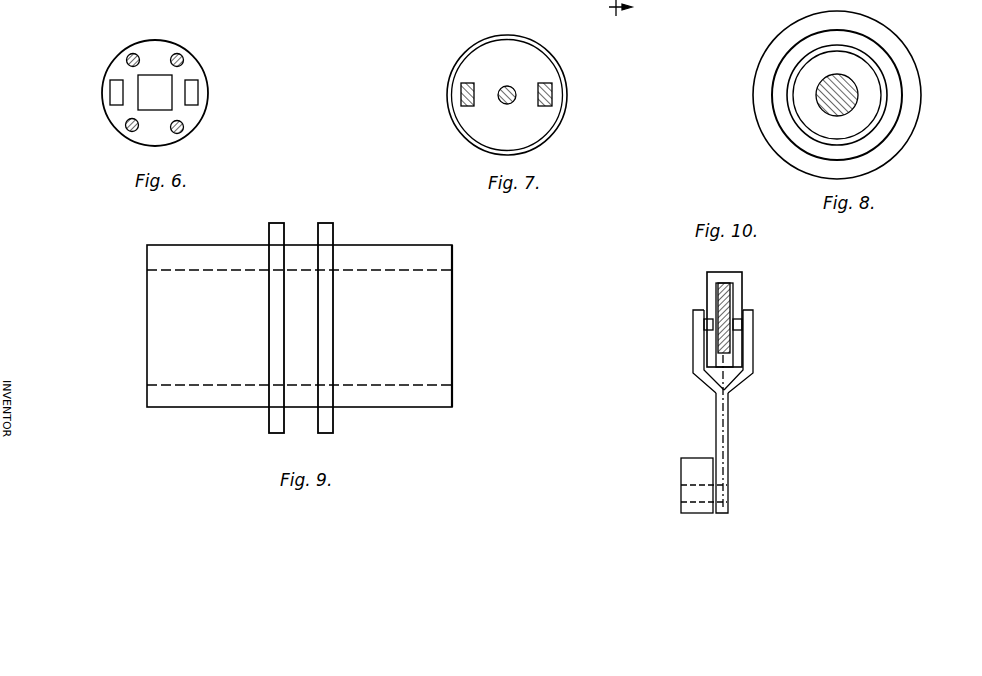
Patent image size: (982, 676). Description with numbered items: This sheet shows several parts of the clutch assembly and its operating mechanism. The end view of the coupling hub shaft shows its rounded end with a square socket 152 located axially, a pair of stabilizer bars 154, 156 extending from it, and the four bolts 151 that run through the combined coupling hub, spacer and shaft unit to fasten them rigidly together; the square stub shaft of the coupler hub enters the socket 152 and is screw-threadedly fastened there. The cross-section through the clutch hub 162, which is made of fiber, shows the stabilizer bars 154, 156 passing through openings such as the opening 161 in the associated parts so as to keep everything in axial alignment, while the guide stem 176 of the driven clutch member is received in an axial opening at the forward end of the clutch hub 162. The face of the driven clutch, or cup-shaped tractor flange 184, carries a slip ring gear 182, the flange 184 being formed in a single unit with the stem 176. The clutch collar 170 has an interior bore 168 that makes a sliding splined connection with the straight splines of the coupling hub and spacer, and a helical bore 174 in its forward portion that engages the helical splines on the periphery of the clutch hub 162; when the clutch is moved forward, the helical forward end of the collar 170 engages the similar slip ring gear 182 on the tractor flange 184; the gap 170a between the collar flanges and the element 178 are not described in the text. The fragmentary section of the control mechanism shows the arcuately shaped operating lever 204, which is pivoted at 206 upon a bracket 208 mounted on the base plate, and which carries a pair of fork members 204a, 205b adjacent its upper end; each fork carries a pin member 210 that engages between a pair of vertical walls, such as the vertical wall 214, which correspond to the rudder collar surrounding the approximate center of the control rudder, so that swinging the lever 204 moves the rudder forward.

In FIG. 6, the bolts 151 is at (127, 58).
In FIG. 6, the square socket 152 is at (155, 74).
In FIG. 6, the stabilizer bar 154 is at (198, 90).
In FIG. 7, the stabilizer bar 154 is at (461, 95).
In FIG. 6, the stabilizer bar 156 is at (115, 95).
In FIG. 7, the stabilizer bar 156 is at (552, 96).
In FIG. 7, the opening 161 is at (547, 7).
In FIG. 7, the clutch hub 162 is at (479, 54).
In FIG. 7, the guide stem 176 is at (502, 100).
In FIG. 8, the central core 178 is at (820, 92).
In FIG. 8, the slip ring gear 182 is at (883, 105).
In FIG. 8, the tractor flange 184 is at (777, 142).
In FIG. 9, the interior bore 168 is at (167, 272).
In FIG. 9, the clutch collar 170 is at (237, 253).
In FIG. 9, the gap between flanges 170a is at (320, 233).
In FIG. 9, the helical bore 174 is at (412, 280).
In FIG. 10, the operating lever 204 is at (728, 427).
In FIG. 10, the fork member 204a is at (694, 352).
In FIG. 10, the fork arm 205b is at (750, 357).
In FIG. 10, the pivot 206 is at (697, 487).
In FIG. 10, the bracket 208 is at (695, 460).
In FIG. 10, the pin member 210 is at (704, 323).
In FIG. 10, the vertical wall 214 is at (742, 277).